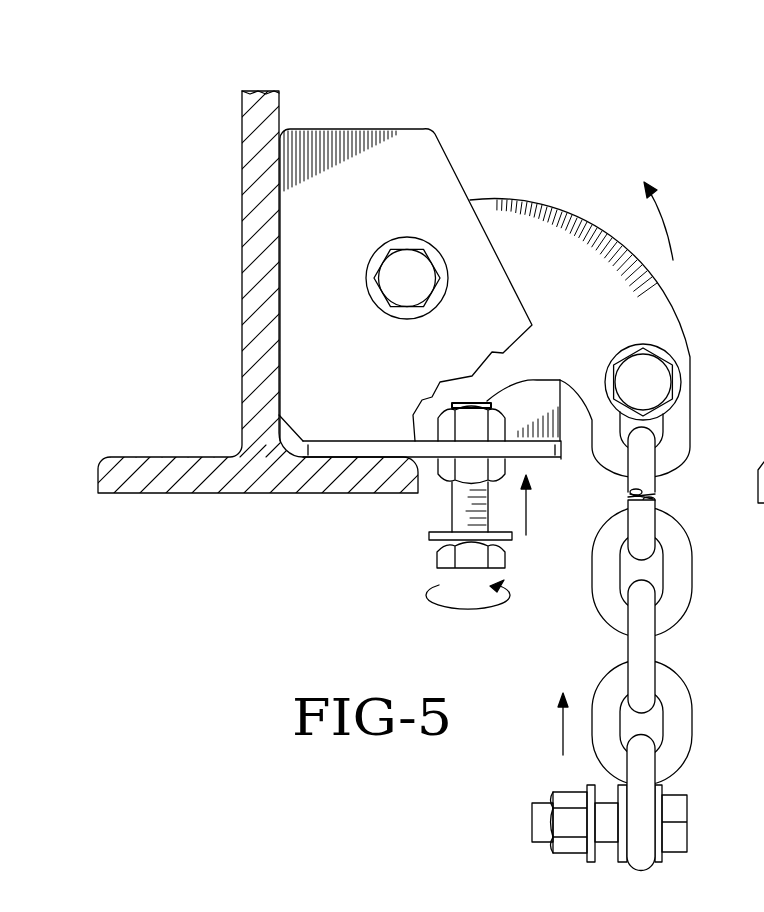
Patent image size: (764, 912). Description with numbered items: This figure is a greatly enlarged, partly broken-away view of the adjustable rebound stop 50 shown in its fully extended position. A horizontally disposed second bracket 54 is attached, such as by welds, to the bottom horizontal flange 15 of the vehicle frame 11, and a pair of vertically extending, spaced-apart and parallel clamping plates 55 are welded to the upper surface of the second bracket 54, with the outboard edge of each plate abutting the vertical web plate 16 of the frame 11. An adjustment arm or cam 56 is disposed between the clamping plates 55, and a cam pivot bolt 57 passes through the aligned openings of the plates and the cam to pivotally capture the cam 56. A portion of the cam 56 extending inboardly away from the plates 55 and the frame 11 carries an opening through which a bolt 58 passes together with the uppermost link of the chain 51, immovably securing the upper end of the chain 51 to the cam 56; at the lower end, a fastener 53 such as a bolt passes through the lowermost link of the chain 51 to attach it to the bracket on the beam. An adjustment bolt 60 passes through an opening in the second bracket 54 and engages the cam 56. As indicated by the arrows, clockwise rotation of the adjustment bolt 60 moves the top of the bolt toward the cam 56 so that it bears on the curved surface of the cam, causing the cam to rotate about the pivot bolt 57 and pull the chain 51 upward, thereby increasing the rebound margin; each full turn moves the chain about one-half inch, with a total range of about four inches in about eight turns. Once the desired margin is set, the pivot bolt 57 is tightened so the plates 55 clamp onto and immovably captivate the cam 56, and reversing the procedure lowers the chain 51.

The vehicle frame 11 is at (316, 340).
The bottom horizontal flange 15 is at (308, 477).
The vertical web plate 16 is at (258, 233).
The rebound stop 50 is at (429, 300).
The chain 51 is at (692, 570).
The fastener 53 is at (688, 808).
The second bracket 54 is at (342, 448).
The clamping plates 55 is at (310, 128).
The adjustment arm or cam 56 is at (611, 298).
The cam pivot bolt 57 is at (398, 272).
The bolt 58 is at (652, 370).
The adjustment bolt 60 is at (437, 561).